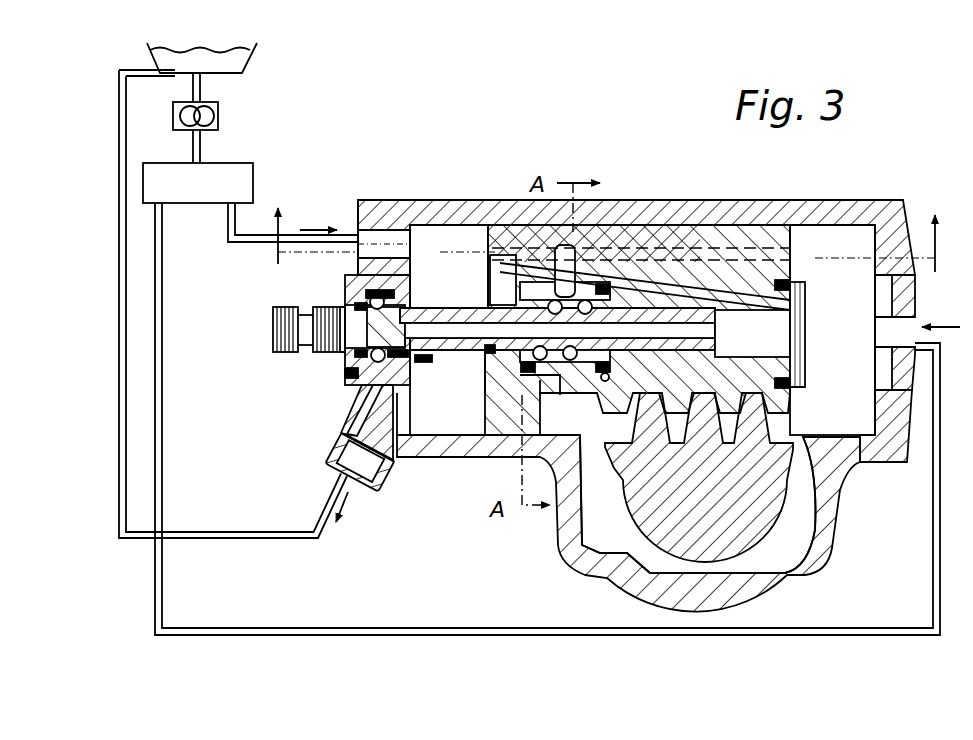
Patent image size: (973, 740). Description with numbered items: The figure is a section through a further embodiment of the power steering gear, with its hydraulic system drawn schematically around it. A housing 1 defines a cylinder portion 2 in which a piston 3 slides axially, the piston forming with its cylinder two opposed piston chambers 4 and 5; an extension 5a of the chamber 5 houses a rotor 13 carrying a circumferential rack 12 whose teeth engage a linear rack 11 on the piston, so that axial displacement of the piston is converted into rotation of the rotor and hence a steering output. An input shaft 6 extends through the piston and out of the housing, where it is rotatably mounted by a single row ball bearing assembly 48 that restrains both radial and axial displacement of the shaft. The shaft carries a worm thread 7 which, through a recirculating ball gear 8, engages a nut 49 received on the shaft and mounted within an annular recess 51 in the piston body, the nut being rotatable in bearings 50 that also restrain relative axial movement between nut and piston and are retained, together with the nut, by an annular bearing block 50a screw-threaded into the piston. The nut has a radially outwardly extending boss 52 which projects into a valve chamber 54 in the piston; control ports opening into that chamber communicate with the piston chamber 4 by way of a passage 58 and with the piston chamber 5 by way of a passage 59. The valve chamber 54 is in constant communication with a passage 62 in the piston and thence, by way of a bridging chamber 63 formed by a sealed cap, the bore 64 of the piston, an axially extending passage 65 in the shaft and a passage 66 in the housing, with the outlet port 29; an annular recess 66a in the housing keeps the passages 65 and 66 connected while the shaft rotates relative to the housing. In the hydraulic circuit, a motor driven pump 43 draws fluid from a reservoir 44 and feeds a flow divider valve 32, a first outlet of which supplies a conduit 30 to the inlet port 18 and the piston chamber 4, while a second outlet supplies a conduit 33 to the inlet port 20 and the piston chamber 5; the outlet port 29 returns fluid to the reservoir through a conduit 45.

The housing 1 is at (360, 205).
The cylinder portion 2 is at (449, 266).
The piston 3 is at (486, 232).
The piston chamber 4 is at (447, 392).
The piston chamber 5 is at (832, 330).
The extension of the chamber 5a is at (698, 504).
The input shaft 6 is at (272, 332).
The worm thread 7 is at (465, 315).
The recirculating ball gear 8 is at (524, 292).
The linear rack 11 is at (606, 396).
The circumferential rack 12 is at (612, 462).
The rotor 13 is at (632, 515).
The inlet port 18 is at (372, 238).
The inlet port 20 is at (920, 322).
The outlet port 29 is at (355, 490).
The conduit 30 is at (238, 245).
The flow divider valve 32 is at (163, 203).
The conduit 33 is at (220, 628).
The motor driven hydraulic pump 43 is at (218, 112).
The reservoir 44 is at (250, 60).
The conduit 45 is at (212, 532).
The single row ball bearing assembly 48 is at (352, 288).
The nut 49 is at (486, 372).
The bearings 50 is at (655, 285).
The annular bearing block 50a is at (520, 380).
The annular recess 51 is at (540, 405).
The boss 52 is at (600, 285).
The valve chamber 54 is at (560, 245).
The passage 58 is at (467, 252).
The passage 59 is at (795, 255).
The passage 62 is at (690, 272).
The bridging chamber 63 is at (800, 318).
The bore 64 is at (752, 333).
The axially extending passage 65 is at (440, 355).
The passage 66 is at (350, 422).
The annular recess 66a is at (348, 372).